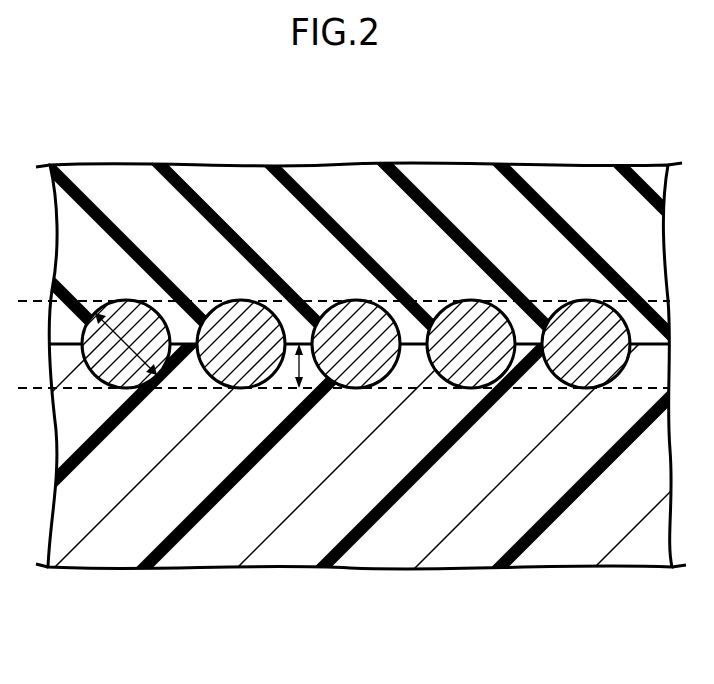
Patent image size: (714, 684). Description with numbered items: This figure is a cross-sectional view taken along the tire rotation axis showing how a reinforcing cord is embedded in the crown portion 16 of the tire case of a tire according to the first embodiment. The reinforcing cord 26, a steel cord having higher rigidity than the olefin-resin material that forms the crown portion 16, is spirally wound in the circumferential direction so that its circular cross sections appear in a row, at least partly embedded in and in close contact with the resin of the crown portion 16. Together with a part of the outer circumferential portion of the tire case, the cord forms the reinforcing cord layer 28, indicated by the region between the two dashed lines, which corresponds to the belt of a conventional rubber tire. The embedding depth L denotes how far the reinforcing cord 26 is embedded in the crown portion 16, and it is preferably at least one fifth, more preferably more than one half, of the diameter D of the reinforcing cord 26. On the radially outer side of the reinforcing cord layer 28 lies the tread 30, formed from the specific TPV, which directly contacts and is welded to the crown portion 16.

The crown portion 16 is at (460, 552).
The reinforcing cord 26 is at (106, 298).
The reinforcing cord layer 28 is at (315, 294).
The tread 30 is at (562, 178).
The diameter of the reinforcing cord D is at (88, 372).
The embedding depth L is at (297, 374).